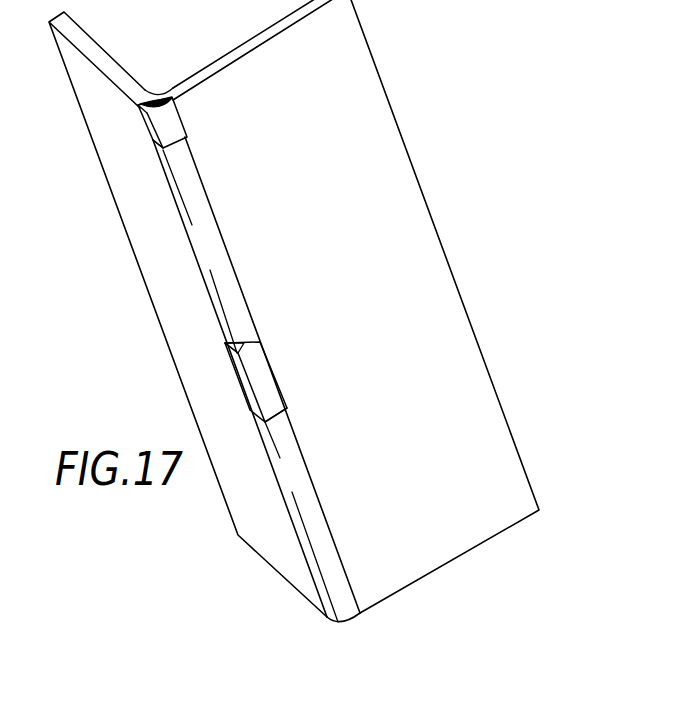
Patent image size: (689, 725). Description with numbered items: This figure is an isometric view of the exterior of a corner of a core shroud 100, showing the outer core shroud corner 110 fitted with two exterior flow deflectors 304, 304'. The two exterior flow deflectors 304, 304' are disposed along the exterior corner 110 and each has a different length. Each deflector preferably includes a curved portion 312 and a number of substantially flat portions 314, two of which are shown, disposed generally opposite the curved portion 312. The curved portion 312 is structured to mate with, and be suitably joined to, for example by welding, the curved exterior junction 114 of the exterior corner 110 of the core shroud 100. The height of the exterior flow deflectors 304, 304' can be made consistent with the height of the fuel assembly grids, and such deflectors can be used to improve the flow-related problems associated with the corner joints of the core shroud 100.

The core shroud 100 is at (311, 311).
The outer core shroud corner 110 is at (160, 188).
The curved exterior junction 114 is at (188, 173).
The exterior flow deflector 304 is at (112, 138).
The exterior flow deflector 304' is at (306, 382).
The curved portion 312 is at (152, 100).
The substantially flat portions 314 is at (147, 122).